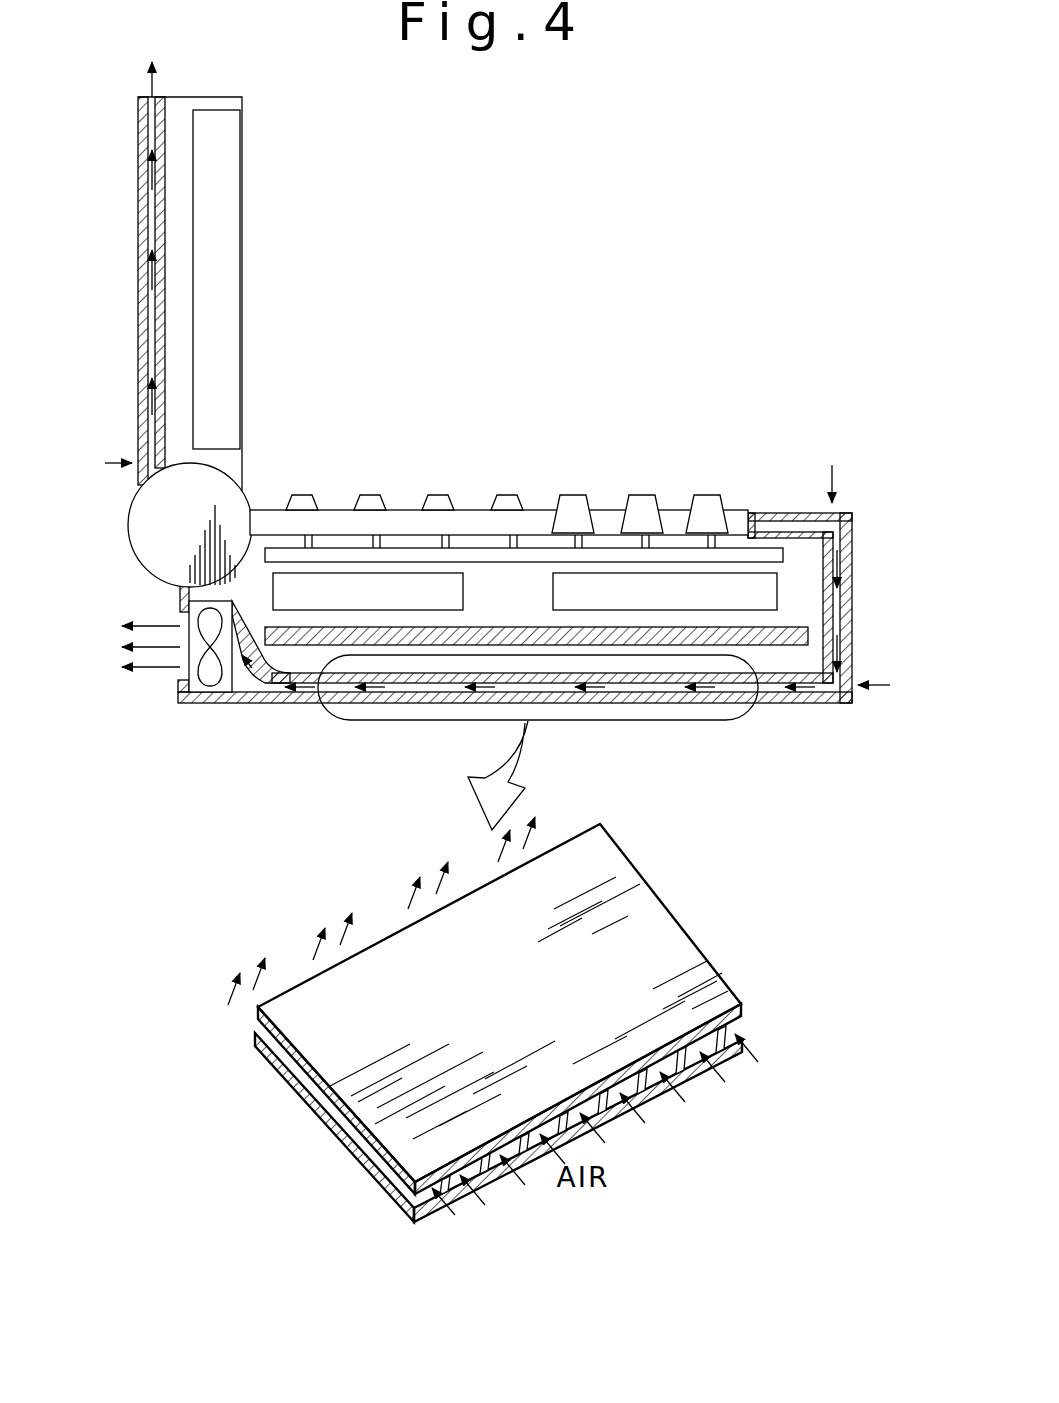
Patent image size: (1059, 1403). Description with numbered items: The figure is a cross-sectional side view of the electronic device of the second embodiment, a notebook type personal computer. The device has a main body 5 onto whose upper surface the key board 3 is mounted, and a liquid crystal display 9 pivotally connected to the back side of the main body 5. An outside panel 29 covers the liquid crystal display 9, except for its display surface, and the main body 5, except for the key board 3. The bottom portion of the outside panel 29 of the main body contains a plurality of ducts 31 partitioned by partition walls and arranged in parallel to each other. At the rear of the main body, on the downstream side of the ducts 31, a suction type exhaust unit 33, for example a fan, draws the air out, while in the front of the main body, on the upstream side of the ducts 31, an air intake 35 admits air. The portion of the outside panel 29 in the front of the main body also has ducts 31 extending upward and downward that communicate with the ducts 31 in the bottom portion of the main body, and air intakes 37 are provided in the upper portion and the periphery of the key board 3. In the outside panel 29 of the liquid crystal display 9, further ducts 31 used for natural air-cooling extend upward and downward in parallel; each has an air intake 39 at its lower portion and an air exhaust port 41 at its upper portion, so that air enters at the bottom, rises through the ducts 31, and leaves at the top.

The key board 3 is at (573, 495).
The main body 5 is at (672, 416).
The liquid crystal display 9 is at (220, 97).
The outside panel 29 is at (140, 193).
The duct 31 is at (152, 232).
The suction type exhaust unit 33 is at (211, 690).
The air intake 35 is at (830, 706).
The air intake 37 is at (752, 527).
The air intake 39 is at (138, 462).
The air exhaust port 41 is at (150, 96).